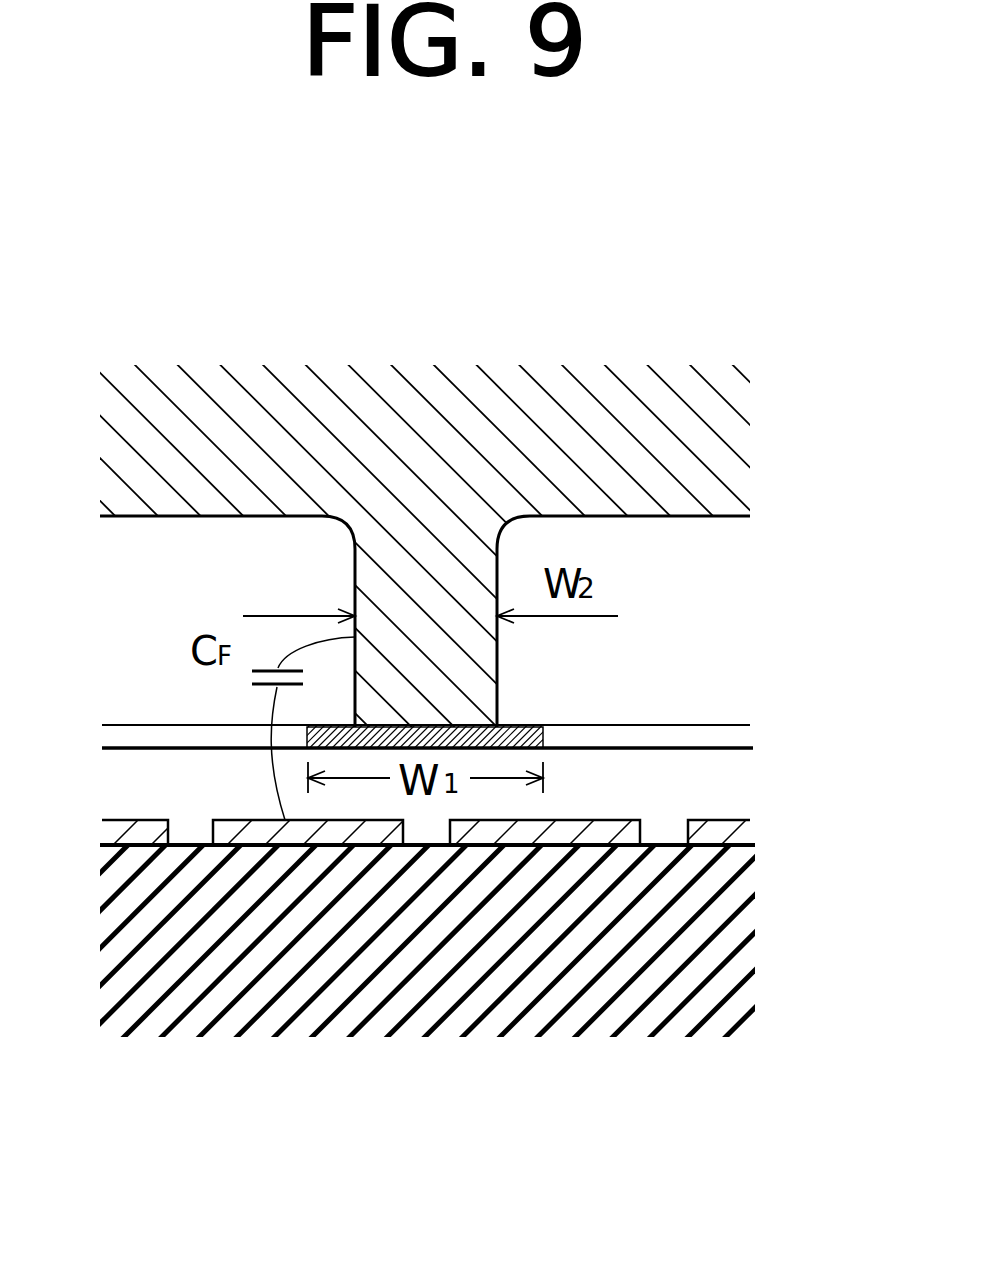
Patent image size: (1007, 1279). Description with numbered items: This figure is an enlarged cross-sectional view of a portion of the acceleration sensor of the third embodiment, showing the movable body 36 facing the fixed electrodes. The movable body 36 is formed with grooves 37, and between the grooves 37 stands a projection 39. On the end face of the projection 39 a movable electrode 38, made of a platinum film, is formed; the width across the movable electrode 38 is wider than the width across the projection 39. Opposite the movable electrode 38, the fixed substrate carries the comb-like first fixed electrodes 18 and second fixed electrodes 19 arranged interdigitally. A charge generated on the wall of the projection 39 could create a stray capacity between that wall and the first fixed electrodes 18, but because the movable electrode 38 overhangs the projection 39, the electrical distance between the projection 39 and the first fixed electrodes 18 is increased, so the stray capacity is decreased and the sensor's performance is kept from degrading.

The first fixed electrode 18 is at (713, 838).
The second fixed electrode 19 is at (540, 845).
The movable body 36 is at (433, 440).
The groove 37 is at (637, 540).
The movable electrode 38 is at (450, 723).
The projection 39 is at (417, 625).